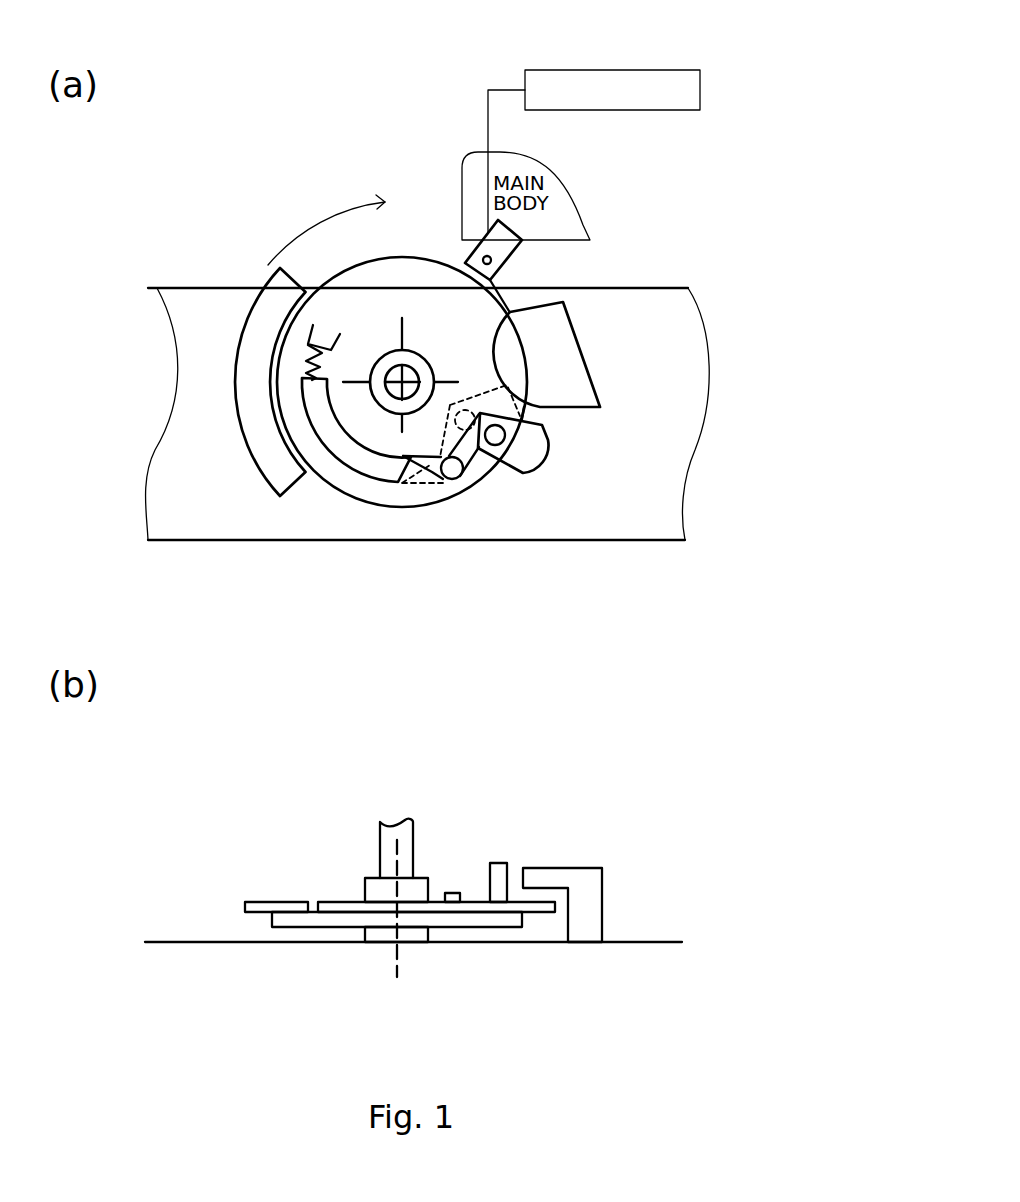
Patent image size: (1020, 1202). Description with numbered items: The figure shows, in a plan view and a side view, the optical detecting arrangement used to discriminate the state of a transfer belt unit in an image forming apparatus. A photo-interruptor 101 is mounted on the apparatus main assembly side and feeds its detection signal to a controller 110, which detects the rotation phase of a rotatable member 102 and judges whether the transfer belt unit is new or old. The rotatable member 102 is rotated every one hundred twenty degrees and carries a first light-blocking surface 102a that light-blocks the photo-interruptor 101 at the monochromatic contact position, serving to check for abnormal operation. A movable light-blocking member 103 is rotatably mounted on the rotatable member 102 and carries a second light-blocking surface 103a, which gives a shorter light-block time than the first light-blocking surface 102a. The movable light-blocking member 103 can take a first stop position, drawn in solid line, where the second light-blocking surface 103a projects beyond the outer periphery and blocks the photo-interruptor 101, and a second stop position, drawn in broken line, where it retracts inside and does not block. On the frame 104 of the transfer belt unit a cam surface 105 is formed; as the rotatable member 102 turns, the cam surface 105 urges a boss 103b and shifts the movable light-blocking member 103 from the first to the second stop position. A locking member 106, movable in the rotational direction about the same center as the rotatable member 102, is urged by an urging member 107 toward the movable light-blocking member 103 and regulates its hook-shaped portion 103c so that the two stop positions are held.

The photo-interruptor 101 is at (520, 230).
The rotatable member 102 is at (453, 325).
The first light-blocking surface 102a is at (262, 418).
The movable light-blocking member 103 is at (452, 468).
The second light-blocking surface 103a is at (527, 455).
The boss 103b is at (495, 435).
The hook-shaped portion 103c is at (450, 480).
The frame 104 is at (198, 505).
The cam surface 105 is at (502, 365).
The locking member 106 is at (300, 378).
The urging member 107 is at (308, 345).
The controller 110 is at (583, 70).